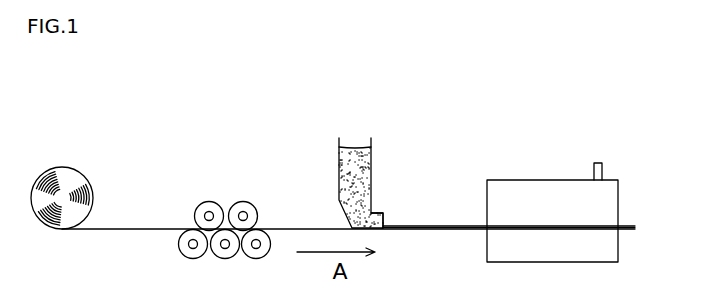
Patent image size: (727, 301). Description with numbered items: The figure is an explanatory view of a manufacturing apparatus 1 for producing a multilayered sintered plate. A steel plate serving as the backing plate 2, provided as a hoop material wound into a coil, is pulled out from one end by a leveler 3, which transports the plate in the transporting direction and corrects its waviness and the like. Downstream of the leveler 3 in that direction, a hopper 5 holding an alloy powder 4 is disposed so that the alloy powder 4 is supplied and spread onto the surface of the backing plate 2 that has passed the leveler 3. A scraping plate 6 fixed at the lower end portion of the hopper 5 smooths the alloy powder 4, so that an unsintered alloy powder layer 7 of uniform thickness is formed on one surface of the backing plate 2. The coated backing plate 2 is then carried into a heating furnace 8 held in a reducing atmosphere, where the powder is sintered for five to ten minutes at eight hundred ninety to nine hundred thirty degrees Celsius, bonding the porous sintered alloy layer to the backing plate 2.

The manufacturing apparatus 1 is at (286, 171).
The backing plate 2 is at (69, 158).
The leveler 3 is at (221, 189).
The alloy powder 4 is at (353, 167).
The hopper 5 is at (384, 166).
The scraping plate 6 is at (378, 212).
The unsintered alloy powder layer 7 is at (443, 226).
The heating furnace 8 is at (549, 171).